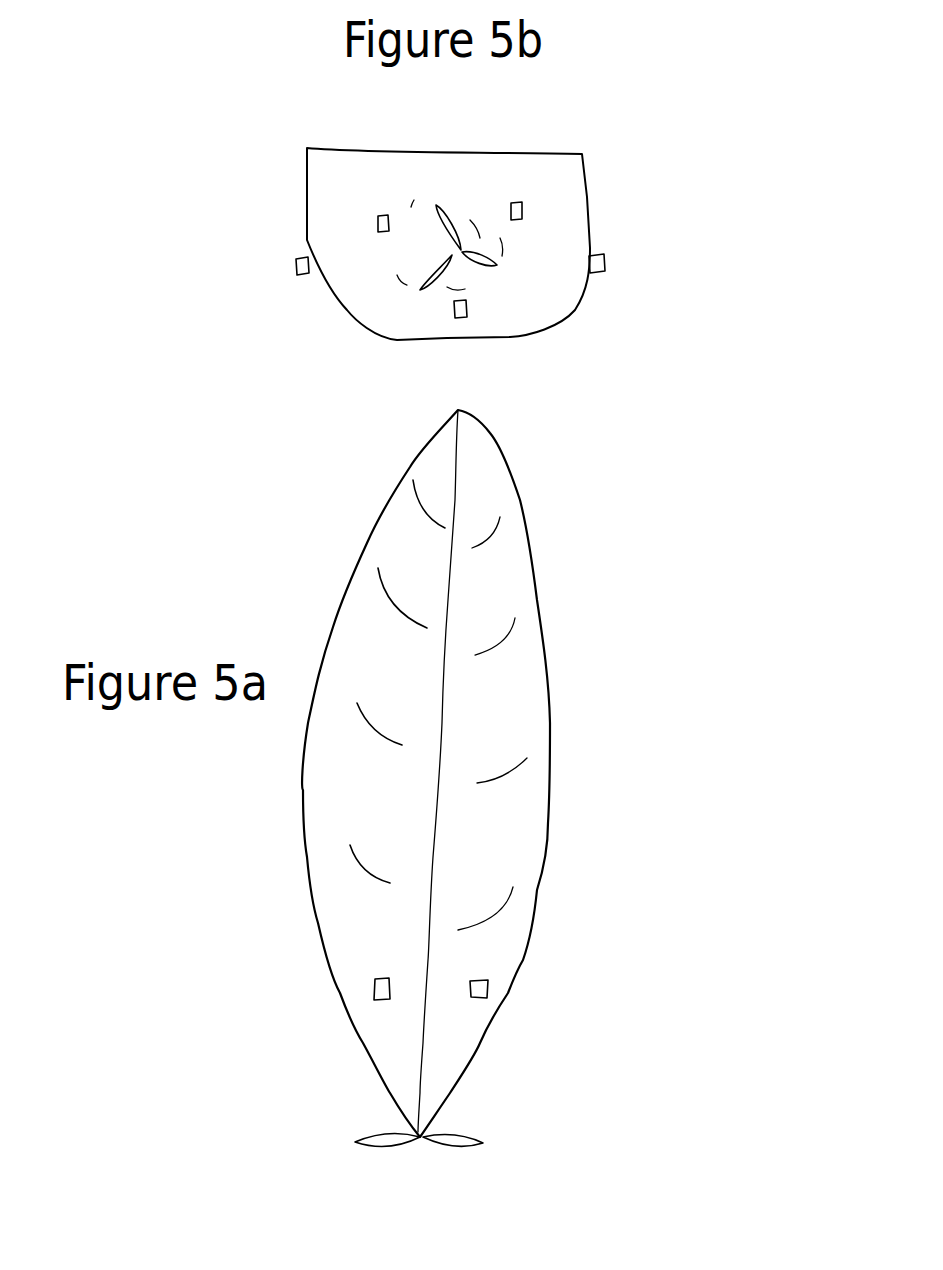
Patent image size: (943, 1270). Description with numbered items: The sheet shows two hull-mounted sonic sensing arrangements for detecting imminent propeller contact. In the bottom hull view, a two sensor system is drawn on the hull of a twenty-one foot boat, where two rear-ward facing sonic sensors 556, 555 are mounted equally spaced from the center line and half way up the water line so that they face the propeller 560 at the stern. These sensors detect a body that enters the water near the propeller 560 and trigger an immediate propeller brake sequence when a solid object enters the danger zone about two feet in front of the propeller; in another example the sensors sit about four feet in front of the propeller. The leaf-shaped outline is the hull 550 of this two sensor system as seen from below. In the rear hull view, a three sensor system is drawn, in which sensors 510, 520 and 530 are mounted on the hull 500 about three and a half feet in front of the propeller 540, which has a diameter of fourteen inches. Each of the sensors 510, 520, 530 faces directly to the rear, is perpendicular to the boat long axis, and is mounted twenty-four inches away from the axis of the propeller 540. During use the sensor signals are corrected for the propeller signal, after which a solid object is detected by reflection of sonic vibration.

In FIG. 5B, the hull 500 is at (410, 307).
In FIG. 5B, the sensor 510 is at (360, 223).
In FIG. 5B, the sensor 520 is at (395, 310).
In FIG. 5B, the sensor 530 is at (296, 268).
In FIG. 5B, the propeller 540 is at (427, 258).
In FIG. 5A, the leaf-shaped cover 550 is at (538, 821).
In FIG. 5A, the sonic sensor 555 is at (495, 993).
In FIG. 5A, the sonic sensor 556 is at (367, 990).
In FIG. 5A, the propeller 560 is at (461, 1182).